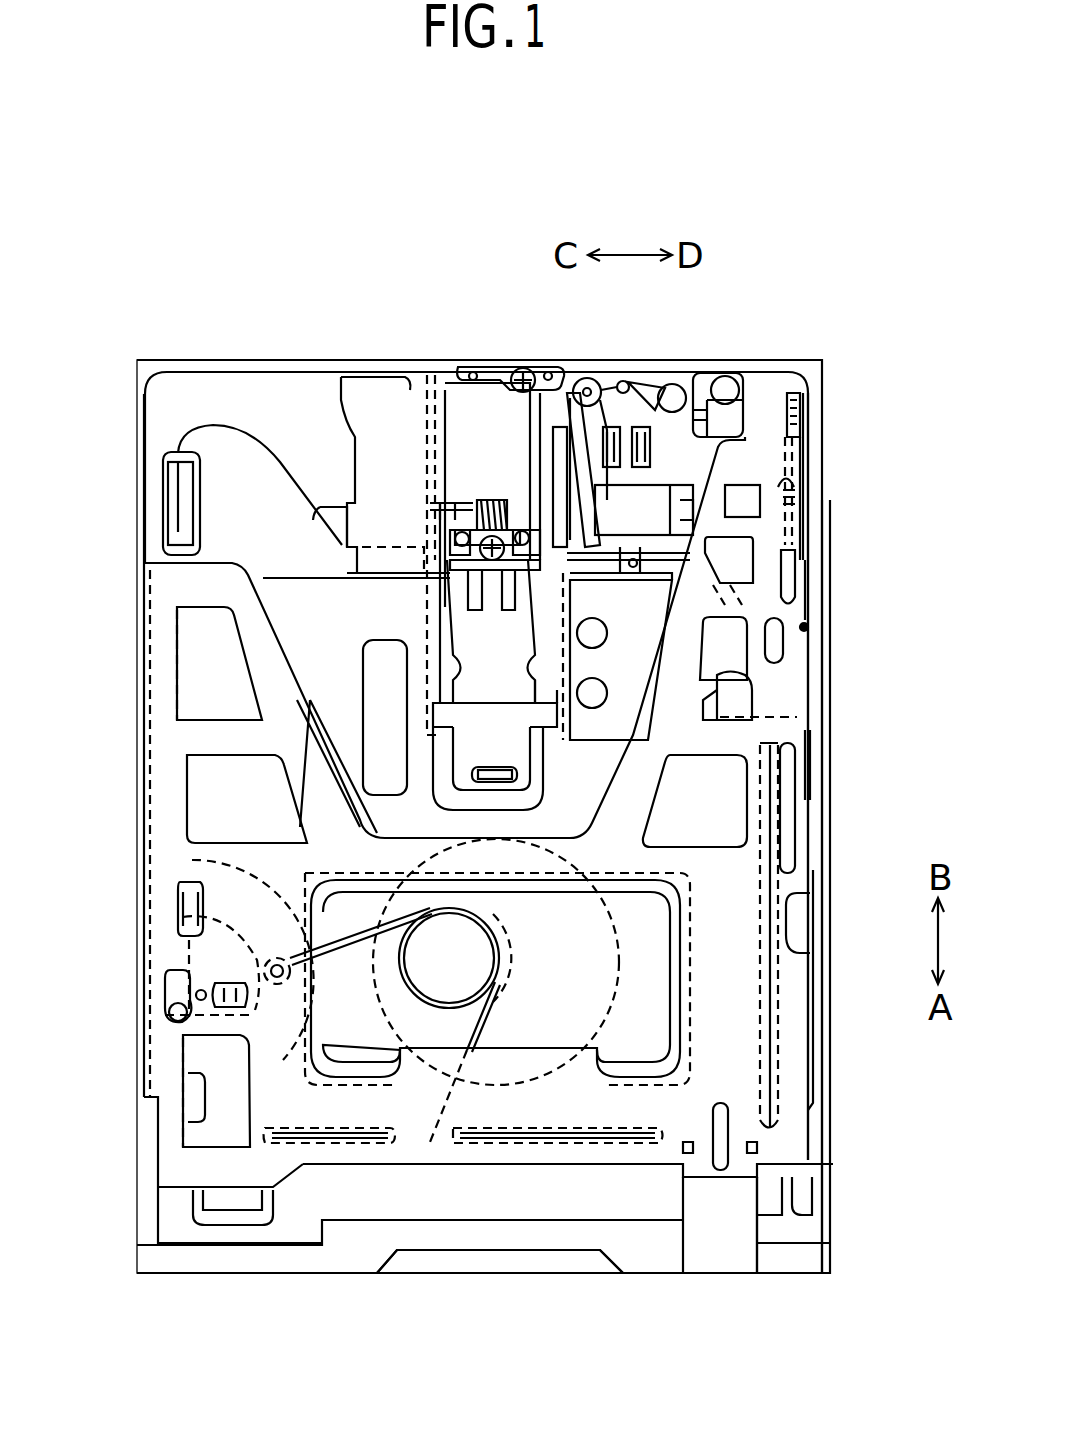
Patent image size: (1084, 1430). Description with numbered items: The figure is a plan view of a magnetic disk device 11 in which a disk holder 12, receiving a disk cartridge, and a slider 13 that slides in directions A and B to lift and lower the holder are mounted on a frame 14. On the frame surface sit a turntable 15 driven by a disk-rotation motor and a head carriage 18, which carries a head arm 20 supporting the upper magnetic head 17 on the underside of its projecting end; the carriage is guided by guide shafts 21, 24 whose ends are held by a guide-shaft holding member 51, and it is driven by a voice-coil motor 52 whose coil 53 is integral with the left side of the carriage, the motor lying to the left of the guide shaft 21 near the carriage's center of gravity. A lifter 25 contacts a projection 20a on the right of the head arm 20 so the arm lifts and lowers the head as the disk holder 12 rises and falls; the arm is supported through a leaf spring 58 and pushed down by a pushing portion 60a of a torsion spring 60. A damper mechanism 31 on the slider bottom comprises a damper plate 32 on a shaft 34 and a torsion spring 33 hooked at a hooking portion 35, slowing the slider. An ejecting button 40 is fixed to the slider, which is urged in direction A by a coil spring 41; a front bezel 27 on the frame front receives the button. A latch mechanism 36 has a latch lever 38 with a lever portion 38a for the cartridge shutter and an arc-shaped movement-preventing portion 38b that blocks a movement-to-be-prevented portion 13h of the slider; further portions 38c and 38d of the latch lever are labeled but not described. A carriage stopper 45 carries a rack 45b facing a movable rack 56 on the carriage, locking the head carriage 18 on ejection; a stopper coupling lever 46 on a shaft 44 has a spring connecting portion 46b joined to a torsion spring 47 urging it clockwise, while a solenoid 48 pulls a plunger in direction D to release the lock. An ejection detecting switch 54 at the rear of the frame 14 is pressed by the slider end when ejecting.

The magnetic disk device 11 is at (410, 178).
The disk holder 12 is at (300, 640).
The slider 13 is at (722, 1025).
The movement-to-be-prevented portion 13h is at (730, 540).
The frame 14 is at (836, 908).
The turntable 15 is at (618, 994).
The magnetic head 17 is at (500, 798).
The head carriage 18 is at (483, 797).
The head arm 20 is at (477, 745).
The projection 20a is at (545, 750).
The guide shaft 21 is at (430, 612).
The guide shaft 24 is at (565, 487).
The lifter 25 is at (600, 656).
The front bezel 27 is at (350, 1262).
The damper mechanism 31 is at (173, 950).
The damper plate 32 is at (192, 860).
The torsion spring 33 is at (480, 1005).
The shaft 34 is at (197, 995).
The hooking portion 35 is at (281, 1019).
The latch mechanism 36 is at (813, 582).
The latch lever 38 is at (790, 637).
The lever portion 38a is at (720, 693).
The movement-preventing portion 38b is at (730, 545).
The slider edge 38c is at (800, 727).
The slider pin 38d is at (806, 600).
The ejecting button 40 is at (723, 1233).
The coil spring 41 is at (805, 412).
The shaft 44 is at (600, 382).
The carriage stopper 45 is at (550, 453).
The rack 45b is at (548, 512).
The stopper coupling lever 46 is at (578, 380).
The spring connecting portion 46b is at (628, 378).
The torsion spring 47 is at (682, 386).
The solenoid 48 is at (643, 500).
The guide-shaft holding member 51 is at (495, 364).
The voice-coil motor 52 is at (405, 388).
The coil 53 is at (360, 470).
The ejection detecting switch 54 is at (727, 376).
The movable rack 56 is at (553, 593).
The leaf spring 58 is at (470, 572).
The torsion spring 60 is at (445, 518).
The pushing portion 60a is at (485, 595).